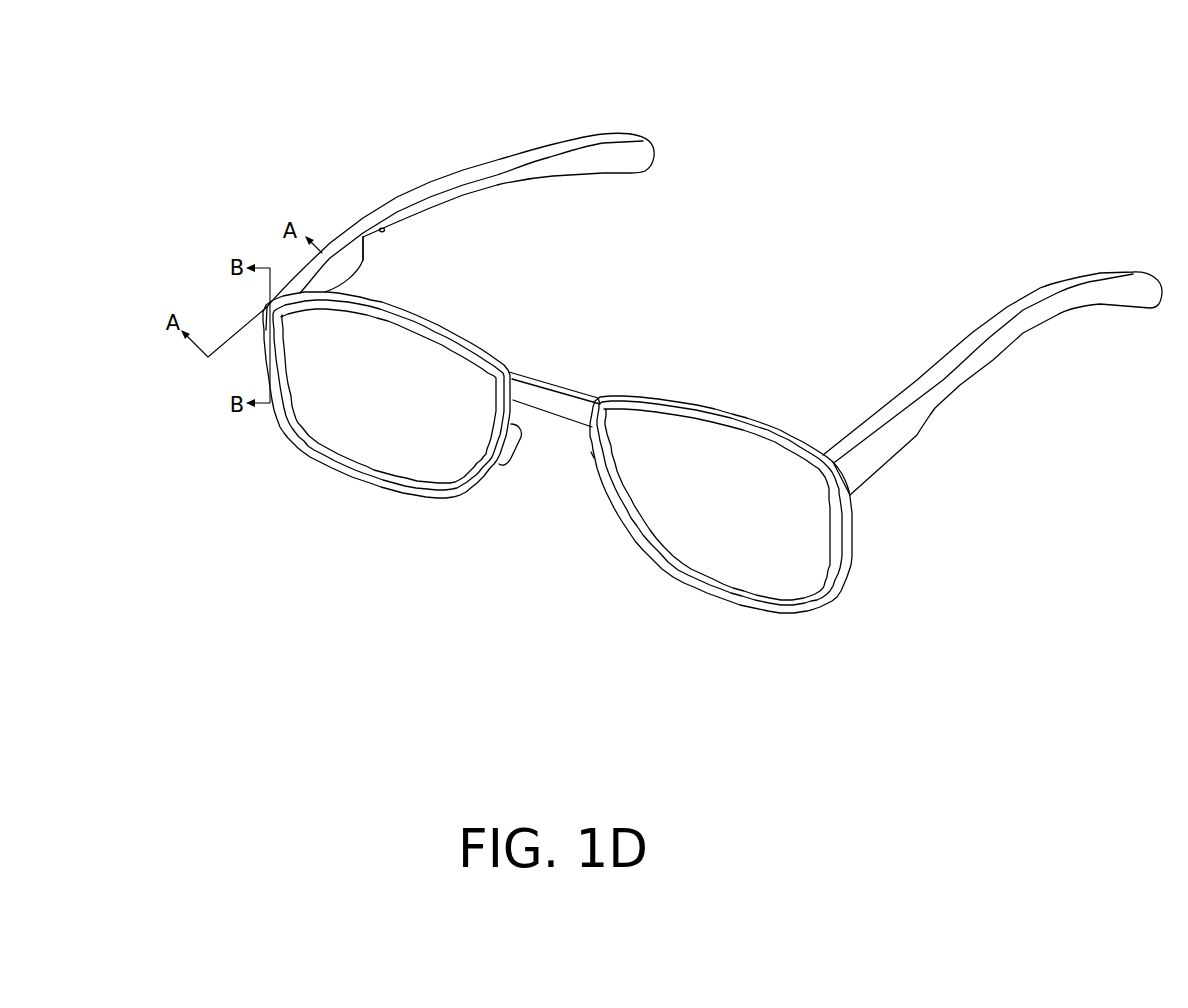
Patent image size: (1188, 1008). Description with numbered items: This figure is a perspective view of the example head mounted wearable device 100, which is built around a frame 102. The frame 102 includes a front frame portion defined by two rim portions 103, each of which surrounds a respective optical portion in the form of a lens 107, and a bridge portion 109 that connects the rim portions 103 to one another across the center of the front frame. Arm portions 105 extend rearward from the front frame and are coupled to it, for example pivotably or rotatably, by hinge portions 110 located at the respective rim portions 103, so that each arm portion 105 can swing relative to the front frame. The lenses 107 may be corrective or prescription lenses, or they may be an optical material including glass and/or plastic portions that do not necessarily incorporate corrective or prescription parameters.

The head mounted wearable device 100 is at (652, 386).
The frame 102 is at (552, 503).
The rim portions 103 is at (290, 447).
The arm portions 105 is at (510, 163).
The lenses 107 is at (377, 433).
The bridge portion 109 is at (552, 392).
The hinge portions 110 is at (254, 306).